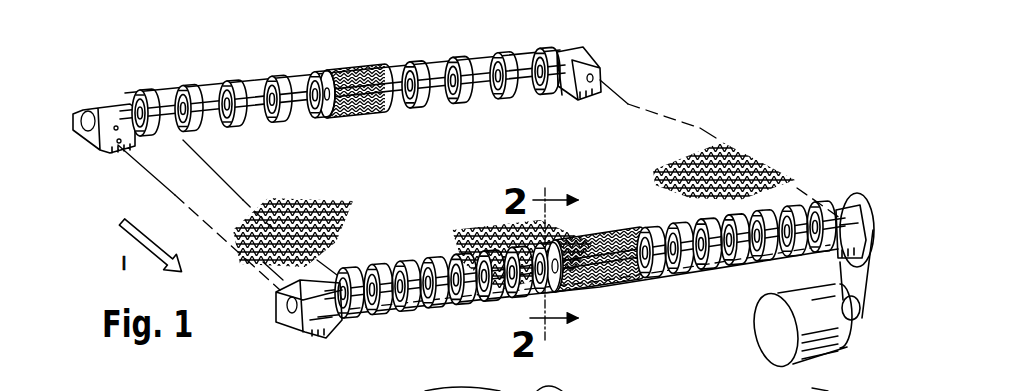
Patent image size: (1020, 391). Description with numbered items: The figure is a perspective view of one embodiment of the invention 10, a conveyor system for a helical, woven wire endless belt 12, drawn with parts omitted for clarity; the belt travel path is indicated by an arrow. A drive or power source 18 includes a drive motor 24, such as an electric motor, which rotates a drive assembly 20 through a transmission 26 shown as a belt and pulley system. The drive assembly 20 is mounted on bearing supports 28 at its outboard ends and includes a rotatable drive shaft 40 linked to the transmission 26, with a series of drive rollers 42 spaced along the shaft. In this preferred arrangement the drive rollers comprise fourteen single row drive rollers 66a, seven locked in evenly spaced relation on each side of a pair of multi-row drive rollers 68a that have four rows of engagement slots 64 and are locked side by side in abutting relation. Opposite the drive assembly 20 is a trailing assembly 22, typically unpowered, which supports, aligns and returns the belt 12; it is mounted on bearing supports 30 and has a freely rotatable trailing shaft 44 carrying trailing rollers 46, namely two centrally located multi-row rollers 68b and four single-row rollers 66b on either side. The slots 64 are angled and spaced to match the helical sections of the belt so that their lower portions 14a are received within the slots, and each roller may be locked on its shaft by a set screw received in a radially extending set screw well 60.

The invention 10 is at (736, 130).
The helical, woven wire endless belt 12 is at (672, 118).
The lower portions 14a is at (590, 390).
The drive or power source 18 is at (820, 366).
The drive assembly 20 is at (677, 287).
The trailing assembly 22 is at (433, 50).
The drive motor 24 is at (780, 348).
The transmission 26 is at (878, 292).
The bearing supports 28 is at (298, 318).
The bearing supports 30 is at (97, 113).
The drive shaft 40 is at (364, 316).
The drive rollers 42 is at (460, 330).
The trailing shaft 44 is at (247, 98).
The trailing rollers 46 is at (362, 52).
The set screw well 60 is at (412, 390).
The engagement slots 64 is at (381, 64).
The single row drive rollers 66a is at (762, 196).
The single-row rollers 66b is at (468, 62).
The multi-row drive rollers 68a is at (632, 290).
The multi-row rollers 68b is at (325, 72).